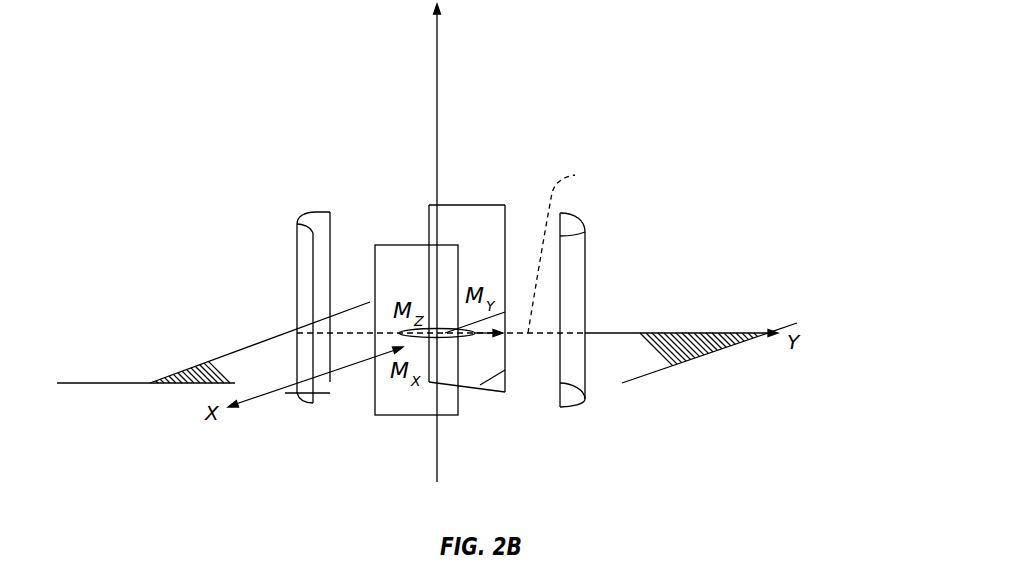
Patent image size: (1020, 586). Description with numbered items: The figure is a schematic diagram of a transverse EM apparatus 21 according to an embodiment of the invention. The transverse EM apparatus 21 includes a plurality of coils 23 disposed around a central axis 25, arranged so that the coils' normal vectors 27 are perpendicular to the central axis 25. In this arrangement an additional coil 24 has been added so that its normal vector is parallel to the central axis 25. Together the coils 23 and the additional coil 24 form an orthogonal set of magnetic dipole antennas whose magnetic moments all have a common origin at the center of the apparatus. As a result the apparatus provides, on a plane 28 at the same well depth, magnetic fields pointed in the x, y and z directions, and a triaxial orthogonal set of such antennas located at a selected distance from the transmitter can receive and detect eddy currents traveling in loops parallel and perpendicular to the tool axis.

The transverse EM apparatus 21 is at (441, 298).
The coils 23 is at (467, 205).
The additional coil 24 is at (462, 337).
The central axis 25 is at (438, 63).
The normal vectors 27 is at (566, 250).
The plane 28 is at (697, 333).